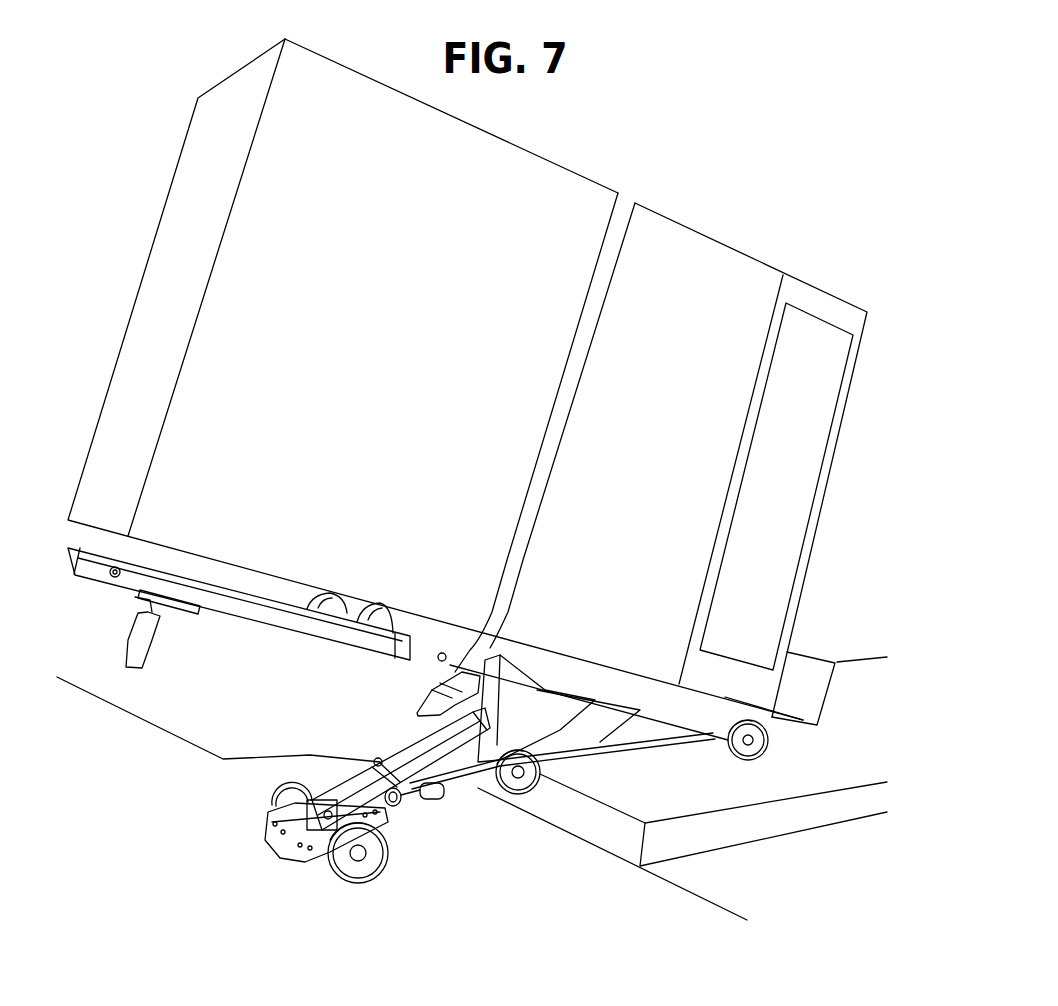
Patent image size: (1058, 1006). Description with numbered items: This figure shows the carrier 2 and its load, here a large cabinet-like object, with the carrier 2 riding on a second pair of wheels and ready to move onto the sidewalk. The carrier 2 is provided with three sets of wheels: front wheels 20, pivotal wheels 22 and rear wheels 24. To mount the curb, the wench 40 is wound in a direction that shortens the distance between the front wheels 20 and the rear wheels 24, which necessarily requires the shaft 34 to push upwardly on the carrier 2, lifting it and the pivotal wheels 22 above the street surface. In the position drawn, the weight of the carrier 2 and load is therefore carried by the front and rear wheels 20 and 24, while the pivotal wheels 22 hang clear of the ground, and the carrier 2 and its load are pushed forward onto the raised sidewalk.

The carrier 2 is at (580, 685).
The front wheels 20 is at (752, 745).
The pivotal wheels 22 is at (517, 783).
The rear wheels 24 is at (368, 870).
The shaft 34 is at (350, 787).
The wench 40 is at (140, 590).